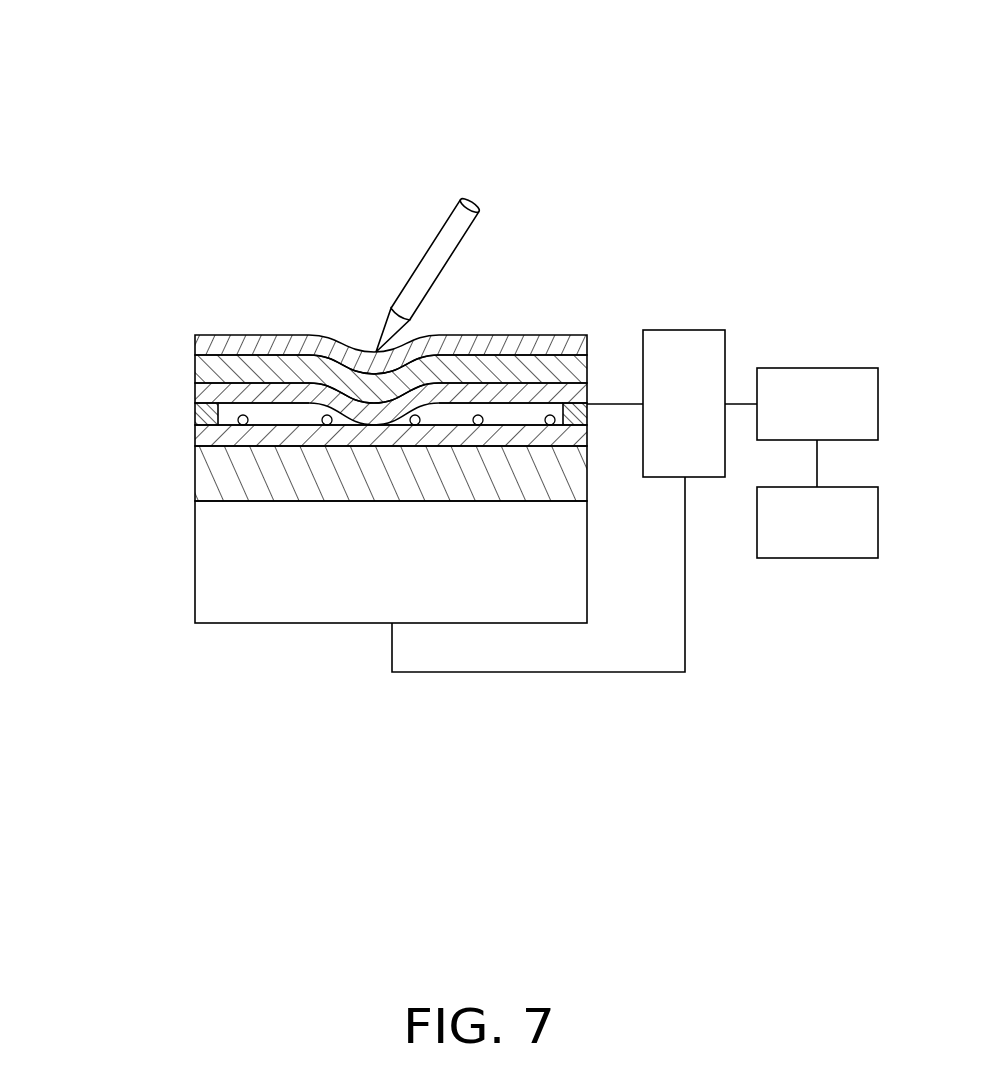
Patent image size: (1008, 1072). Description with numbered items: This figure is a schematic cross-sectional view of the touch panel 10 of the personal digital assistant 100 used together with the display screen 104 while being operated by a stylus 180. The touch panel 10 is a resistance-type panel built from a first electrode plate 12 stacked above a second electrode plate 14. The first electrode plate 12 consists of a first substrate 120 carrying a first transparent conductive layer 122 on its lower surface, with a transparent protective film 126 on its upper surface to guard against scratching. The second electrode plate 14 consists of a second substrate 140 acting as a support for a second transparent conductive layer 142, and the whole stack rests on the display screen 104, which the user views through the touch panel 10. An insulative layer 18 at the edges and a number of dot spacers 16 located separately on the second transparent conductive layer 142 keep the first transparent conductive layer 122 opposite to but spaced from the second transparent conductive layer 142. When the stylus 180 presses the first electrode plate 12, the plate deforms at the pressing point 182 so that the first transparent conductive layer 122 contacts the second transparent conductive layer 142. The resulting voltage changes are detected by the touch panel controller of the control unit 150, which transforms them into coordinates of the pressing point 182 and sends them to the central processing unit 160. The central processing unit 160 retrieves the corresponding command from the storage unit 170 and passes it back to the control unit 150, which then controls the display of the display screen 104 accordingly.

The personal digital assistant 100 is at (470, 23).
The touch panel 10 is at (60, 340).
The first electrode plate 12 is at (107, 348).
The second electrode plate 14 is at (107, 432).
The dot spacers 16 is at (497, 402).
The insulative layer 18 is at (588, 418).
The transparent protective film 126 is at (195, 337).
The first substrate 120 is at (195, 358).
The first transparent conductive layer 122 is at (195, 392).
The second transparent conductive layer 142 is at (195, 432).
The second substrate 140 is at (195, 477).
The display screen 104 is at (212, 575).
The control unit 150 is at (687, 343).
The central processing unit 160 is at (815, 383).
The storage unit 170 is at (803, 543).
The stylus 180 is at (443, 243).
The pressing point 182 is at (376, 352).